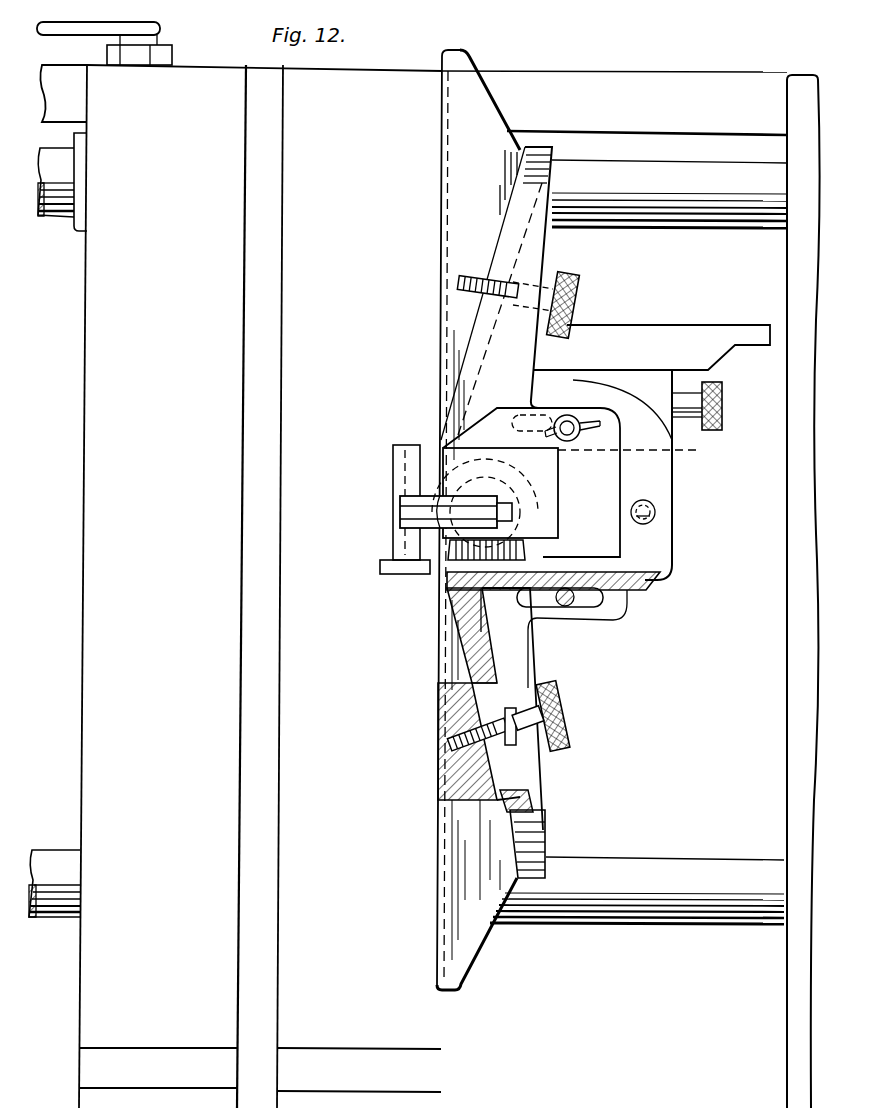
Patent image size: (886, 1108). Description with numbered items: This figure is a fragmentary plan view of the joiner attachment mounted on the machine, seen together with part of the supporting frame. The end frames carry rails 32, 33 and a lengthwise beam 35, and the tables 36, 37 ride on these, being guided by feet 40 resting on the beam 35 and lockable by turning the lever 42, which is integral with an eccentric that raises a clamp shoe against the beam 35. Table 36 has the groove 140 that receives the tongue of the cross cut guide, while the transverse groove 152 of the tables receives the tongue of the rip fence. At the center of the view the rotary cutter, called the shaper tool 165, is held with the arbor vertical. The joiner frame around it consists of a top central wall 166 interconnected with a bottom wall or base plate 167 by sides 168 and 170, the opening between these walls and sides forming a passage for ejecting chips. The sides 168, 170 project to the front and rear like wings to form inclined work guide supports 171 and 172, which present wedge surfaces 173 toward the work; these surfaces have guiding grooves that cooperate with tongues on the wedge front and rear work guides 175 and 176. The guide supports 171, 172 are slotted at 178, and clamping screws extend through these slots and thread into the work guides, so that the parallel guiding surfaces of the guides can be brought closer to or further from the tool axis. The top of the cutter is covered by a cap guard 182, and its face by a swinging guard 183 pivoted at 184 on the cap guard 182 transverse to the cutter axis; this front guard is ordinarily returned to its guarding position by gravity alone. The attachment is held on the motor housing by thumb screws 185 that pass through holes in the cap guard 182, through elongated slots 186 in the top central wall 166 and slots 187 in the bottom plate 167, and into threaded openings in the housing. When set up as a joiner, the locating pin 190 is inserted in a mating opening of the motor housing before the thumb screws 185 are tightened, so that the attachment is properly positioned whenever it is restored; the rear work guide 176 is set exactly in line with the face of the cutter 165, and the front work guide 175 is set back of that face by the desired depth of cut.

The rail 32 is at (668, 865).
The rail 33 is at (642, 172).
The beam 35 is at (614, 97).
The table 36 is at (260, 586).
The table 37 is at (787, 702).
The feet 40 is at (412, 100).
The lever 42 is at (68, 25).
The groove 140 is at (257, 586).
The transverse groove 152 is at (260, 1070).
The shaper tool 165 is at (468, 556).
The top central wall 166 is at (606, 538).
The bottom wall or base plate 167 is at (654, 534).
The side 168 is at (672, 447).
The side 170 is at (649, 593).
The work guide support 171 is at (505, 774).
The work guide support 172 is at (538, 259).
The wedge surface 173 is at (523, 831).
The front work guide 175 is at (470, 881).
The rear work guide 176 is at (456, 213).
The slot 178 is at (565, 754).
The cap guard 182 is at (548, 479).
The swinging guard 183 is at (400, 516).
The pivot 184 is at (485, 503).
The thumb screw 185 is at (574, 420).
The elongated slot 186 is at (614, 452).
The slot 187 is at (600, 600).
The locating pin 190 is at (655, 507).